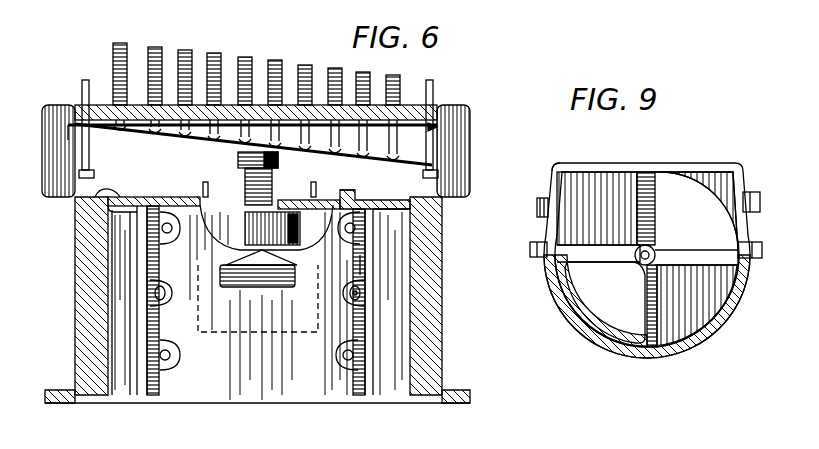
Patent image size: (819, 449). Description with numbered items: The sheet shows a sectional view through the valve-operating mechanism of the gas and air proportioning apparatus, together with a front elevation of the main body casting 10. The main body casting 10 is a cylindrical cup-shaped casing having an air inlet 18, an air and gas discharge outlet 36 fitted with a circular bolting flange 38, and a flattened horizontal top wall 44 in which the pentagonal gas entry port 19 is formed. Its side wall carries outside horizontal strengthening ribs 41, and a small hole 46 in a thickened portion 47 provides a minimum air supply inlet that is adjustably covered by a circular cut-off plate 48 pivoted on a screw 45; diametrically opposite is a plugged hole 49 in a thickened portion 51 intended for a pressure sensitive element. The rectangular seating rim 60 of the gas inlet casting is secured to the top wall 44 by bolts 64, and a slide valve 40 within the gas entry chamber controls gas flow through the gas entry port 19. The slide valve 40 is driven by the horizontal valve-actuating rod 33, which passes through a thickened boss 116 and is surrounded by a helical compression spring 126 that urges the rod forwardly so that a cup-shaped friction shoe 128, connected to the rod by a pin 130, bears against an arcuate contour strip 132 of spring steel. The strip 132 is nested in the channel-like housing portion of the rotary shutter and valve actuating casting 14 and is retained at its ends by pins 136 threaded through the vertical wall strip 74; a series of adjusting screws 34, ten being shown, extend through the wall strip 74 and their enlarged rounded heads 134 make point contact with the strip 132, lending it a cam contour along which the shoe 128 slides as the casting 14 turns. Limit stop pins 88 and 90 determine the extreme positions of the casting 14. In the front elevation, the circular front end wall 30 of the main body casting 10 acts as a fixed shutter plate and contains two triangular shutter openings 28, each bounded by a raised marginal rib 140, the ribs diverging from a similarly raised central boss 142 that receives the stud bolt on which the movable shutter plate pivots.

In FIG. 6, the main body casting 10 is at (396, 341).
In FIG. 6, the rotary shutter and valve actuating casting 14 is at (477, 140).
In FIG. 6, the air inlet 18 is at (153, 405).
In FIG. 6, the gas entry port 19 is at (280, 290).
In FIG. 9, the shutter openings 28 is at (665, 197).
In FIG. 9, the front end wall 30 is at (575, 182).
In FIG. 6, the valve-actuating rod 33 is at (152, 264).
In FIG. 6, the adjusting screws 34 is at (216, 53).
In FIG. 6, the air and gas discharge outlet 36 is at (290, 387).
In FIG. 6, the bolting flange 38 is at (470, 400).
In FIG. 6, the slide valve 40 is at (292, 262).
In FIG. 9, the strengthening ribs 41 is at (530, 248).
In FIG. 6, the top wall 44 is at (78, 205).
In FIG. 9, the screw 45 is at (537, 207).
In FIG. 6, the small hole 46 is at (157, 292).
In FIG. 6, the thickened portion 47 is at (148, 277).
In FIG. 9, the circular cut-off plate 48 is at (552, 172).
In FIG. 6, the plugged hole 49 is at (360, 293).
In FIG. 9, the plugged hole 49 is at (742, 192).
In FIG. 6, the thickened portion 51 is at (366, 266).
In FIG. 6, the seating rim 60 is at (355, 192).
In FIG. 6, the bolts 64 is at (162, 229).
In FIG. 6, the vertical wall strip 74 is at (231, 105).
In FIG. 6, the limit stop pin 88 is at (202, 185).
In FIG. 6, the limit stop pin 90 is at (305, 196).
In FIG. 6, the thickened boss 116 is at (240, 222).
In FIG. 6, the helical compression spring 126 is at (245, 190).
In FIG. 6, the cup-shaped friction shoe 128 is at (237, 158).
In FIG. 6, the pin 130 is at (280, 160).
In FIG. 6, the arcuate contour strip 132 is at (128, 142).
In FIG. 6, the rounded heads 134 is at (112, 122).
In FIG. 6, the pins 136 is at (82, 88).
In FIG. 9, the raised marginal rib 140 is at (587, 253).
In FIG. 9, the boss 142 is at (650, 250).